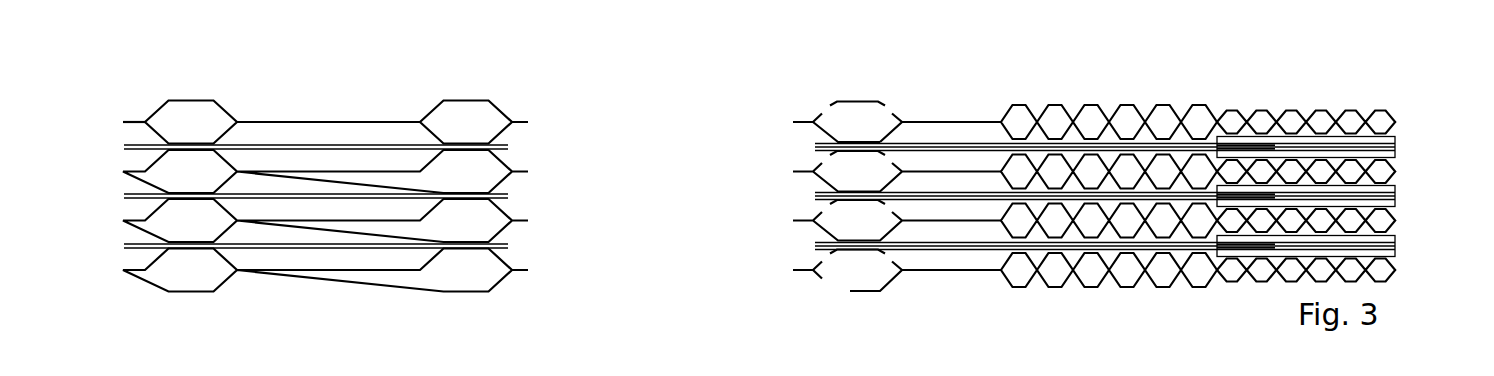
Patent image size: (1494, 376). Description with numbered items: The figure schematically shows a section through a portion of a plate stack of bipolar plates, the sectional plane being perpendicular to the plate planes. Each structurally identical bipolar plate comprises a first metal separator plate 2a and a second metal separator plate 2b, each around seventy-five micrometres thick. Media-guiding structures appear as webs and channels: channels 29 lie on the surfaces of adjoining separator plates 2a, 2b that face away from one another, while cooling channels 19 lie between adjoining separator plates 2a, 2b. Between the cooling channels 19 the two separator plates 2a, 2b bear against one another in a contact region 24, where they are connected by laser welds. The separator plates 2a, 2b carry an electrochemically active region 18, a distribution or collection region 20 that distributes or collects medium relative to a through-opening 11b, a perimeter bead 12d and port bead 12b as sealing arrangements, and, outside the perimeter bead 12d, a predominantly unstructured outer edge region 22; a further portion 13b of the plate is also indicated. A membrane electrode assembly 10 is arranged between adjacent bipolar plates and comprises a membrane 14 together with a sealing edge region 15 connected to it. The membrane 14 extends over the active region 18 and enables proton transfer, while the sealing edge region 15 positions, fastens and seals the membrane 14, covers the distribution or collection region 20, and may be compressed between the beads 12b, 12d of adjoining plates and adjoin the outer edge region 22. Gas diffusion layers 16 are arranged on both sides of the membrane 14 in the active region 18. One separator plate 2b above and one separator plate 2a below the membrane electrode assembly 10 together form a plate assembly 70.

The through-opening 11b is at (692, 210).
The outer edge region 22 is at (124, 119).
The perimeter bead 12d is at (187, 100).
The port bead 12b is at (468, 100).
The sealing edge region 15 is at (317, 145).
The open cell segment 13b is at (828, 101).
The first separator plate 2a is at (860, 101).
The second separator plate 2b is at (893, 131).
The distribution or collection region 20 is at (1076, 100).
The gas diffusion layer 16 is at (1226, 138).
The membrane 14 is at (1386, 147).
The membrane electrode assembly 10 is at (1123, 163).
The electrochemically active region 18 is at (1306, 161).
The cooling channel 19 is at (1290, 121).
The contact region 24 is at (1305, 121).
The channel 29 is at (1366, 118).
The plate assembly 70 is at (1143, 161).